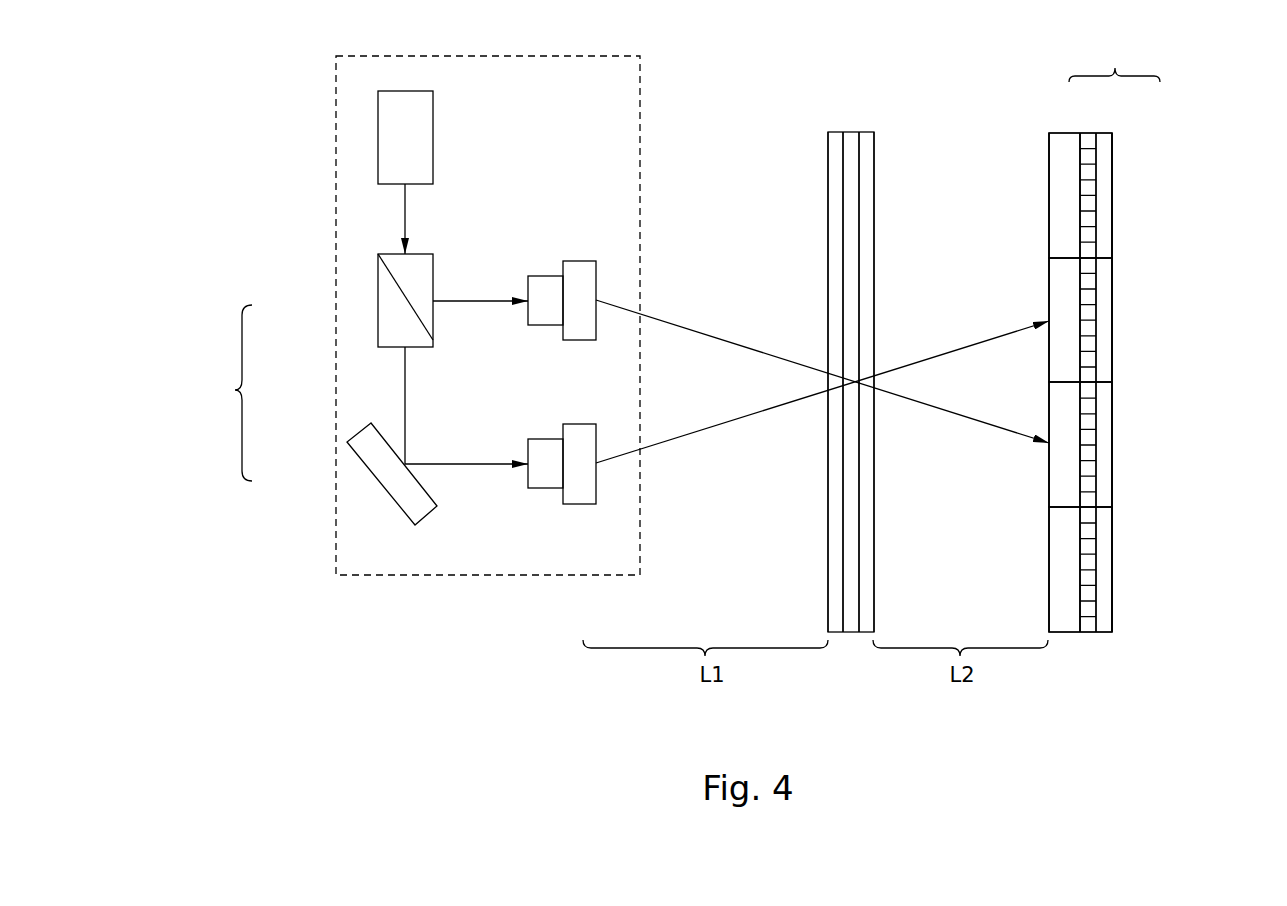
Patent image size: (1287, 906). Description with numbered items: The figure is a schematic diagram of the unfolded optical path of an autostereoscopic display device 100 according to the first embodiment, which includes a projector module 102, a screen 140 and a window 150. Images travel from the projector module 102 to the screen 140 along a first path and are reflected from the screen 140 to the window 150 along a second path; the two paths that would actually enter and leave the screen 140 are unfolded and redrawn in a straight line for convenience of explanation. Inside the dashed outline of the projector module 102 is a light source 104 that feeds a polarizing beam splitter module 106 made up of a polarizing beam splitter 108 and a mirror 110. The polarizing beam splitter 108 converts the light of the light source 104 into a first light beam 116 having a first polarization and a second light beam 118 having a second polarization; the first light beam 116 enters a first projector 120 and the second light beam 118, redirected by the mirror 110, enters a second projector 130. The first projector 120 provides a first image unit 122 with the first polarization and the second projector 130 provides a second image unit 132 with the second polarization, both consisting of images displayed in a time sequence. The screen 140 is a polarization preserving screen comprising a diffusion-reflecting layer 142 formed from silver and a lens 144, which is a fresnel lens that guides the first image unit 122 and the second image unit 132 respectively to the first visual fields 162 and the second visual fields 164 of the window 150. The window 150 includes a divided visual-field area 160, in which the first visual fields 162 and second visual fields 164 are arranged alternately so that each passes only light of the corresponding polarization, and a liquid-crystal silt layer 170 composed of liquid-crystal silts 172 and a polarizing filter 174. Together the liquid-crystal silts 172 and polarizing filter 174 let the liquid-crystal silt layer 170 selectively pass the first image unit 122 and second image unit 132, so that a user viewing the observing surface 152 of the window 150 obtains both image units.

The autostereoscopic display device 100 is at (159, 48).
The projector module 102 is at (336, 107).
The light source 104 is at (378, 143).
The polarizing beam splitter module 106 is at (222, 393).
The polarizing beam splitter 108 is at (378, 300).
The mirror 110 is at (377, 446).
The first light beam 116 is at (468, 297).
The second light beam 118 is at (468, 462).
The first projector 120 is at (580, 261).
The second projector 130 is at (580, 504).
The first image unit 122 is at (952, 412).
The second image unit 132 is at (952, 350).
The screen 140 is at (860, 396).
The diffusion-reflecting layer 142 is at (849, 132).
The lens 144 is at (840, 132).
The window 150 is at (1103, 386).
The observing surface 152 is at (1172, 375).
The divided visual-field area 160 is at (1060, 133).
The first visual fields 162 is at (1067, 170).
The second visual fields 164 is at (1067, 325).
The liquid-crystal silt layer 170 is at (1114, 336).
The liquid-crystal silts 172 is at (1088, 133).
The polarizing filter 174 is at (1105, 133).